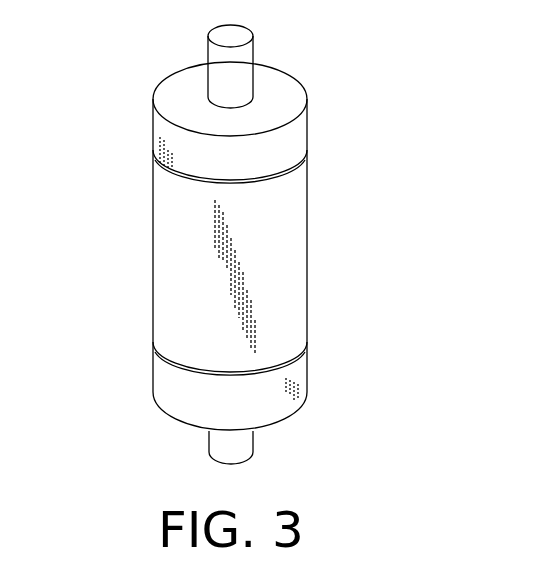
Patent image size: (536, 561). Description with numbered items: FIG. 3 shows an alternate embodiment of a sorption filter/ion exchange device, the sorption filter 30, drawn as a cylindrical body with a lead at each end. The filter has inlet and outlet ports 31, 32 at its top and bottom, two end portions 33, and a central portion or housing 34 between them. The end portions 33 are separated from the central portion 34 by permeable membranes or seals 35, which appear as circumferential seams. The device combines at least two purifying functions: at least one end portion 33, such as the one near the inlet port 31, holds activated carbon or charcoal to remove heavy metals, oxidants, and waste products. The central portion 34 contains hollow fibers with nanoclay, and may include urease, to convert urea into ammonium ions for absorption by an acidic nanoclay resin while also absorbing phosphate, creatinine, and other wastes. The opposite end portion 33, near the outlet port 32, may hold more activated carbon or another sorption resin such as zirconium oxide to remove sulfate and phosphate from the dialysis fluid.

The sorption filter 30 is at (252, 249).
The inlet port 31 is at (208, 442).
The outlet port 32 is at (253, 52).
The end portion 33 is at (307, 120).
The central portion 34 is at (307, 272).
The permeable membrane 35 is at (153, 156).